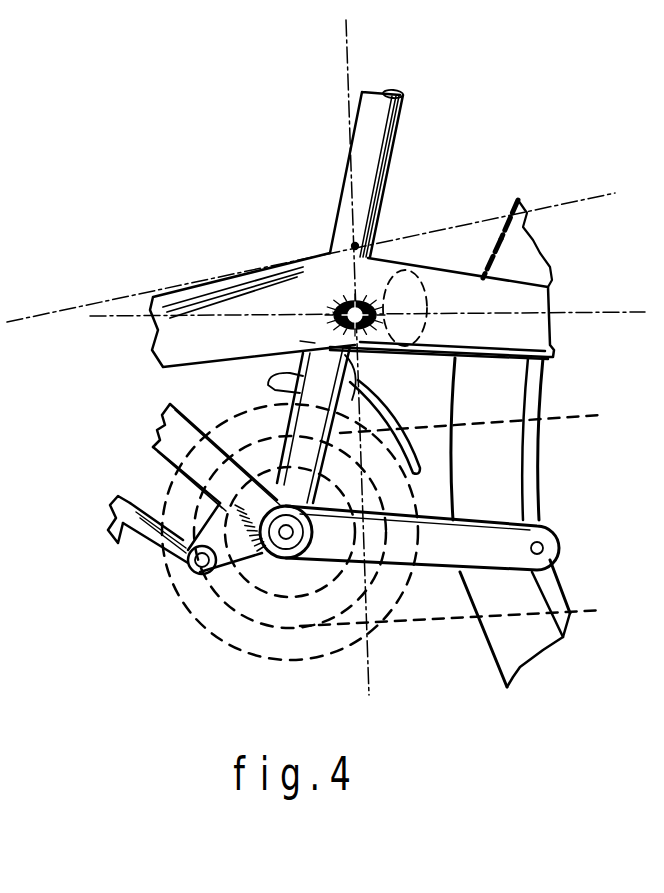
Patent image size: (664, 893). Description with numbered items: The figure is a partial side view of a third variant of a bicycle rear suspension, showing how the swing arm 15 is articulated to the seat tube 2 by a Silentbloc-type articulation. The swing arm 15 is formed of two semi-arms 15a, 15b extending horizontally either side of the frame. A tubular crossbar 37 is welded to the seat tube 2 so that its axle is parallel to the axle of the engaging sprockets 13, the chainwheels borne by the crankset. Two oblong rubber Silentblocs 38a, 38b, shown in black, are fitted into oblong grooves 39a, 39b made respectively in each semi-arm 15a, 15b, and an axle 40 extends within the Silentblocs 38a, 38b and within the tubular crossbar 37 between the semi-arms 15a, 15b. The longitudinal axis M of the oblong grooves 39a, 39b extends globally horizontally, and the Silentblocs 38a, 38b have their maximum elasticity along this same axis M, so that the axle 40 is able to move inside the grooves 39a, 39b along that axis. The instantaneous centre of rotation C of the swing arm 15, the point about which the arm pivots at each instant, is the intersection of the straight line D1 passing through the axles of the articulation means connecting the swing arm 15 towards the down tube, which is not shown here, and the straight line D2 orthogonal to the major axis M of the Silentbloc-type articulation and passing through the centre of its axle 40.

The seat tube 2 is at (392, 158).
The engaging sprockets 13 is at (200, 642).
The swing arm 15 is at (557, 242).
The semi-arm 15a is at (585, 282).
The semi-arm 15b is at (554, 485).
The tubular crossbar 37 is at (307, 341).
The Silentbloc 38a is at (390, 266).
The Silentbloc 38b is at (492, 258).
The oblong groove 39a is at (240, 283).
The oblong groove 39b is at (235, 295).
The axle 40 is at (333, 312).
The instantaneous centre of rotation C is at (345, 300).
The straight line D'1 D1 is at (589, 193).
The straight line D'2 D2 is at (347, 75).
The longitudinal axis M is at (605, 337).